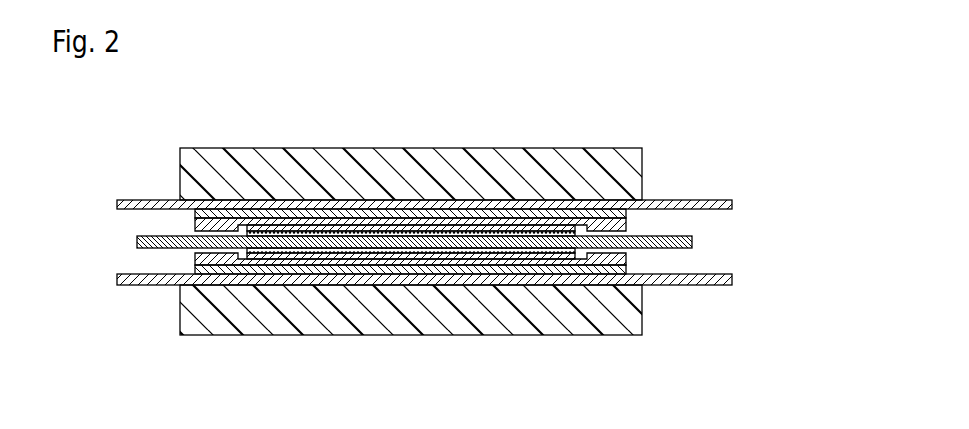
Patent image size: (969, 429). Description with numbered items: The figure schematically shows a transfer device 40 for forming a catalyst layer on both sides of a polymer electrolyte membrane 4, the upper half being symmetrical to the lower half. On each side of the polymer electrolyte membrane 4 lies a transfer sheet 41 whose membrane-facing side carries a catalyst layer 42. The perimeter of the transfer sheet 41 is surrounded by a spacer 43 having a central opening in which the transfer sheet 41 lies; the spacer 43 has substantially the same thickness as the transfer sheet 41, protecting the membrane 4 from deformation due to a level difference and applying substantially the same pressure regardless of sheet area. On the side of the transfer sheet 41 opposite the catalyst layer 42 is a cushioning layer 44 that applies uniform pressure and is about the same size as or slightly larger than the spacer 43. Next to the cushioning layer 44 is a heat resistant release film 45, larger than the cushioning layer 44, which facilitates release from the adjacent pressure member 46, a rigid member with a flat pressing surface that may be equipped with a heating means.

The polymer electrolyte membrane 4 is at (692, 243).
The transfer device 40 is at (483, 128).
The transfer sheet 41 is at (330, 228).
The catalyst layer 42 is at (406, 234).
The spacer 43 is at (627, 221).
The cushioning layer 44 is at (196, 220).
The heat resistant release film 45 is at (142, 205).
The pressure member 46 is at (585, 172).